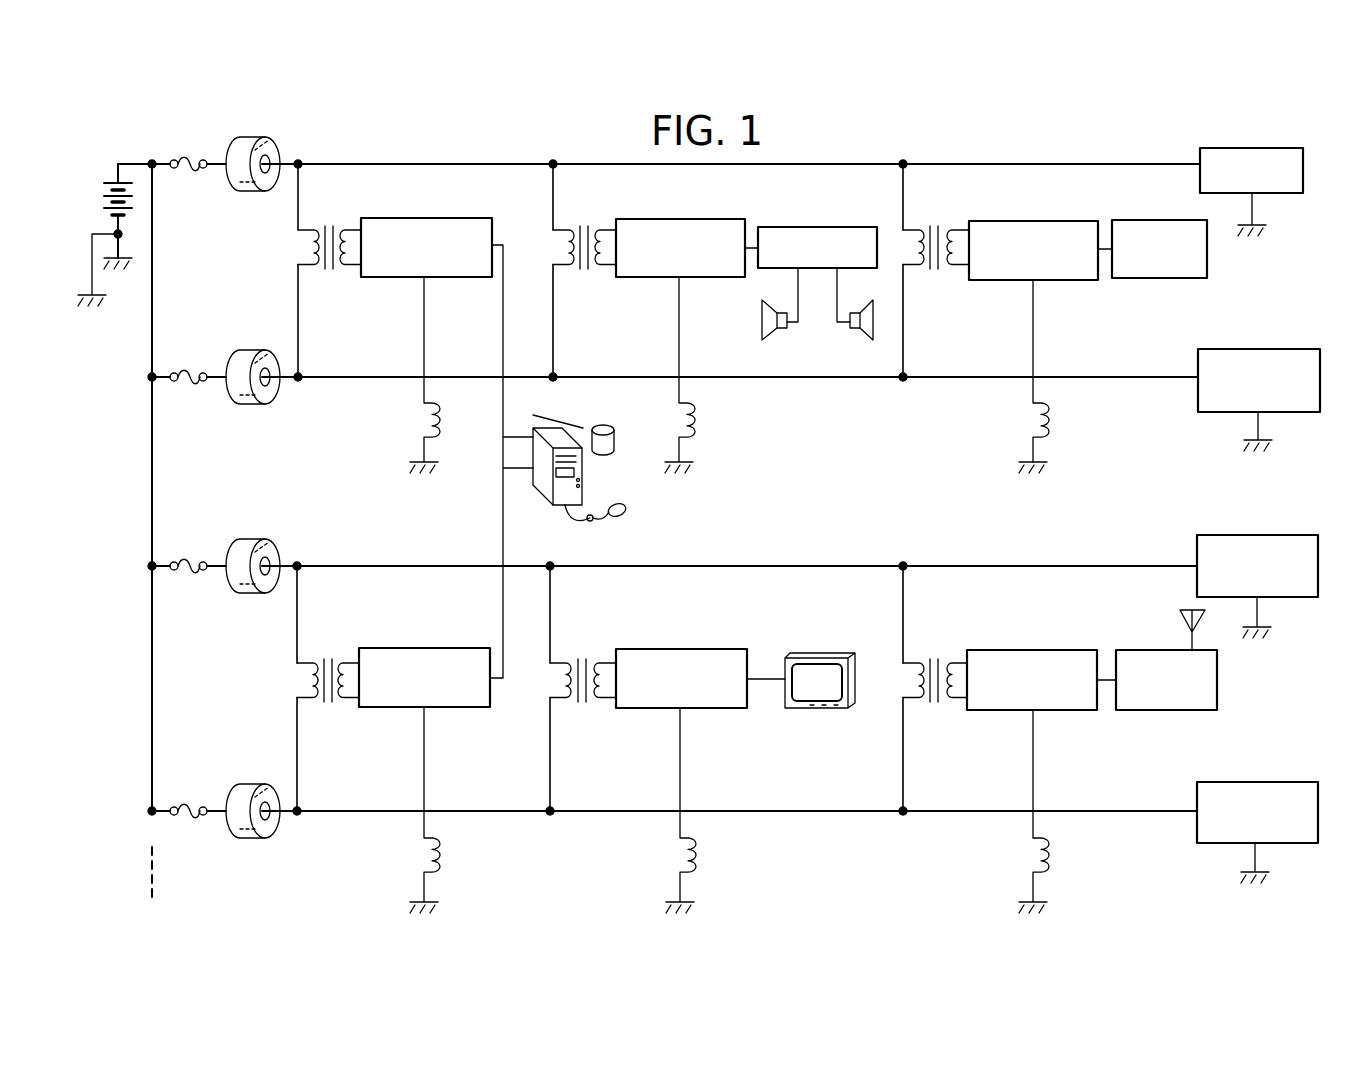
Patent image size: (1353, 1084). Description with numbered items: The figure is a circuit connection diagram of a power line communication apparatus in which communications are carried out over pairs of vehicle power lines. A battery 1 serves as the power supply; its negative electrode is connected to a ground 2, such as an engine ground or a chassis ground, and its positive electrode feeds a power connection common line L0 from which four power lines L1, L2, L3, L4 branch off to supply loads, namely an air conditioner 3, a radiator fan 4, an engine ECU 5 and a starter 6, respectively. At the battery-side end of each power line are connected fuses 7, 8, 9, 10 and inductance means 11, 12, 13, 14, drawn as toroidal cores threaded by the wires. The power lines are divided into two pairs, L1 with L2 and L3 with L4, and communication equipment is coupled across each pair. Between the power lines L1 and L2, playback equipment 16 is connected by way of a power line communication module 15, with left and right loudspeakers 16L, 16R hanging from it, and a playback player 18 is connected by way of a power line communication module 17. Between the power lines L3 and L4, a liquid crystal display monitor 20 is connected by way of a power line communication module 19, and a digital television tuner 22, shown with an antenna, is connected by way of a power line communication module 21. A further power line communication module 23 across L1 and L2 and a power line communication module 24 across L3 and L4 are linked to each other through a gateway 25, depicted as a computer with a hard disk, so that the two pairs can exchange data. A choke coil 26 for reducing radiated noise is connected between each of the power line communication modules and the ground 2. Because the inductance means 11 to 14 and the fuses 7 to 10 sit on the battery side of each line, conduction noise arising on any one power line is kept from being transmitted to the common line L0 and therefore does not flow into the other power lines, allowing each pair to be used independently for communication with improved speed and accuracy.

The battery 1 is at (104, 200).
The ground 2 is at (121, 278).
The air conditioner 3 is at (1270, 148).
The radiator fan 4 is at (1290, 351).
The engine ECU 5 is at (1290, 528).
The starter 6 is at (1290, 779).
The fuse 7 is at (191, 149).
The fuse 8 is at (194, 362).
The fuse 9 is at (194, 551).
The fuse 10 is at (191, 796).
The inductance means 11 is at (261, 136).
The inductance means 12 is at (261, 350).
The inductance means 13 is at (261, 536).
The inductance means 14 is at (261, 781).
The power line communication module 15 is at (710, 219).
The playback equipment 16 is at (838, 227).
The left speaker 16L is at (769, 342).
The right speaker 16R is at (859, 342).
The power line communication module 17 is at (1063, 219).
The playback player 18 is at (1158, 219).
The power line communication module 19 is at (710, 648).
The liquid crystal display monitor 20 is at (836, 651).
The power line communication module 21 is at (1062, 649).
The digital television tuner 22 is at (1150, 649).
The power line communication module 23 is at (455, 217).
The power line communication module 24 is at (455, 647).
The gateway 25 is at (562, 515).
The choke coil 26 is at (424, 423).
The power connection common line L0 is at (145, 638).
The power line L1 is at (345, 161).
The power line L2 is at (345, 375).
The power line L3 is at (345, 564).
The power line L4 is at (342, 810).